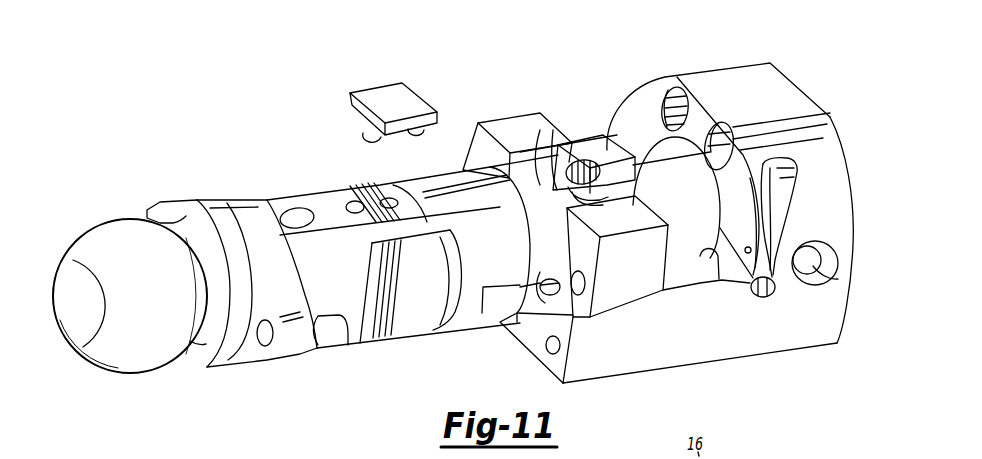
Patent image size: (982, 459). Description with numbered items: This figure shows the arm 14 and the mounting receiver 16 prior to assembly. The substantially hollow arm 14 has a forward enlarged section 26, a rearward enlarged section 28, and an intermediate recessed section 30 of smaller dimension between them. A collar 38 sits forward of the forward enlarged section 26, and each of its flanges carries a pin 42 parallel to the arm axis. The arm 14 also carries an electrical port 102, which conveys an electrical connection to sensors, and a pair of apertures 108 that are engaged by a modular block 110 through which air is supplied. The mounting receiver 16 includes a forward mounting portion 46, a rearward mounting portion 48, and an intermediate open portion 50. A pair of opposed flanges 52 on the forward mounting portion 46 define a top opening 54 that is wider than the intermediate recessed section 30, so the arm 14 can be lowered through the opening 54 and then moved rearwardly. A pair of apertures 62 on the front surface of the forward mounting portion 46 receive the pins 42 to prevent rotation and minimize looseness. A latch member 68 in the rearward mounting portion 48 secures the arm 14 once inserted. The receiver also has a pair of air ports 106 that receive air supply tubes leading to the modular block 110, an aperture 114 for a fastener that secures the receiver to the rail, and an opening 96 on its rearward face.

The arm 14 is at (344, 229).
The mounting receiver 16 is at (692, 220).
The forward enlarged section 26 is at (276, 196).
The rearward enlarged section 28 is at (441, 167).
The intermediate recessed section 30 is at (400, 318).
The collar 38 is at (300, 352).
The pin 42 is at (327, 331).
The forward mounting portion 46 is at (578, 370).
The rearward mounting portion 48 is at (736, 80).
The intermediate open portion 50 is at (708, 290).
The flanges 52 is at (498, 127).
The top opening 54 is at (540, 182).
The apertures 62 is at (590, 285).
The latch member 68 is at (773, 248).
The bore 96 is at (813, 270).
The electrical port 102 is at (296, 214).
The air ports 106 is at (674, 103).
The apertures 108 is at (390, 200).
The modular block 110 is at (411, 88).
The aperture 114 is at (587, 160).